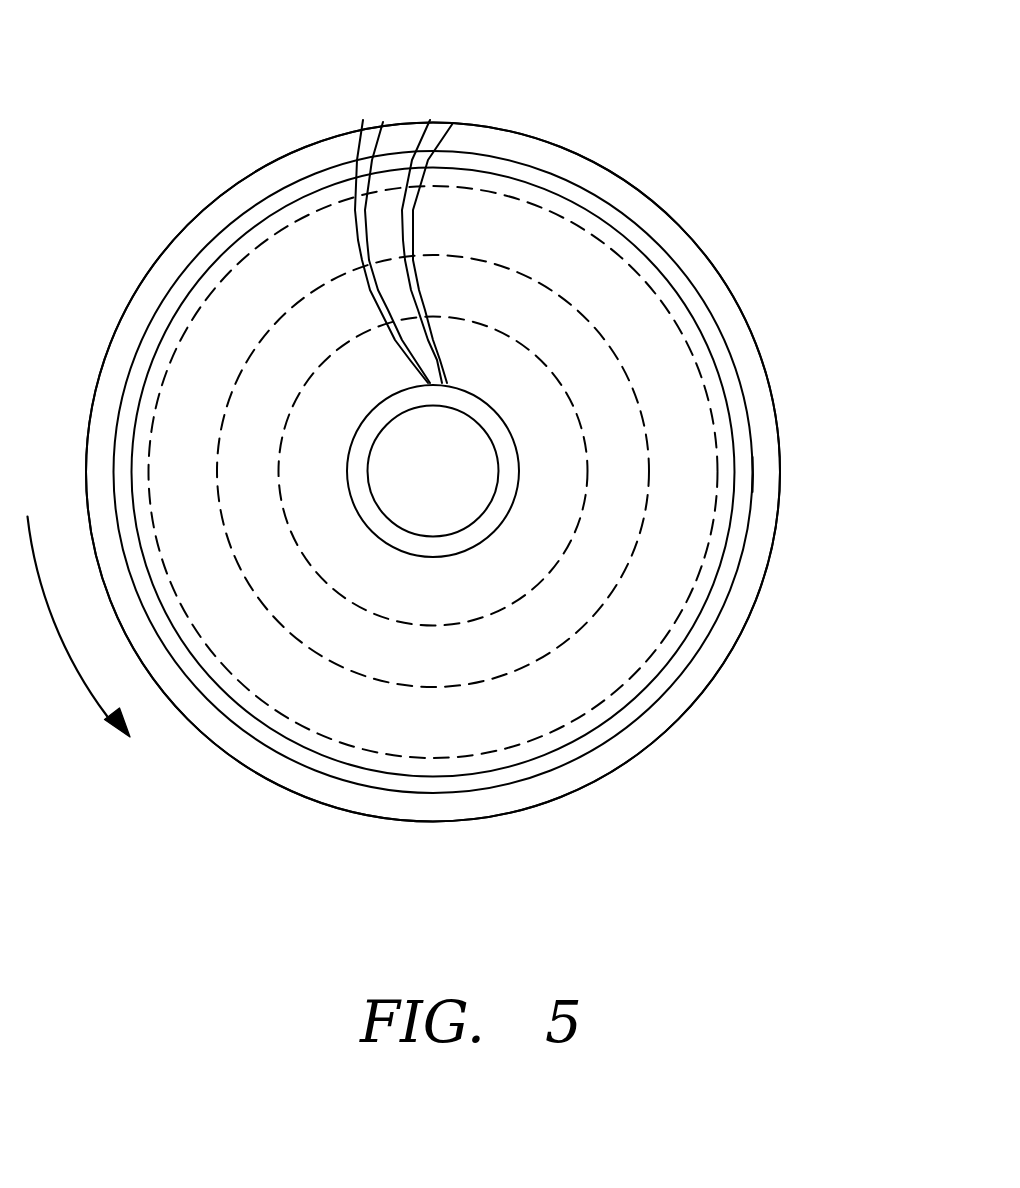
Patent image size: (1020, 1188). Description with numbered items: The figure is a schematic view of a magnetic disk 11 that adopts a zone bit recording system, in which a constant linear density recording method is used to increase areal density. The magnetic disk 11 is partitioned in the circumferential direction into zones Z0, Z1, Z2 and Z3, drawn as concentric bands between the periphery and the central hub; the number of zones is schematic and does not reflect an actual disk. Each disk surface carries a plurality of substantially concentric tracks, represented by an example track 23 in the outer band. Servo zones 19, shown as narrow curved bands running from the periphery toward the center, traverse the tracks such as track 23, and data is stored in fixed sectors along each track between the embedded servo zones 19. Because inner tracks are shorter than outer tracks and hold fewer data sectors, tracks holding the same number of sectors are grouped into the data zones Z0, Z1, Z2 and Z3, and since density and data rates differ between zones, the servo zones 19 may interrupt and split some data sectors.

The magnetic disk 11 is at (790, 663).
The servo zones 19 is at (430, 123).
The track 23 is at (737, 492).
The zone Z0 is at (560, 157).
The zone Z1 is at (605, 297).
The zone Z2 is at (593, 382).
The zone Z3 is at (563, 470).